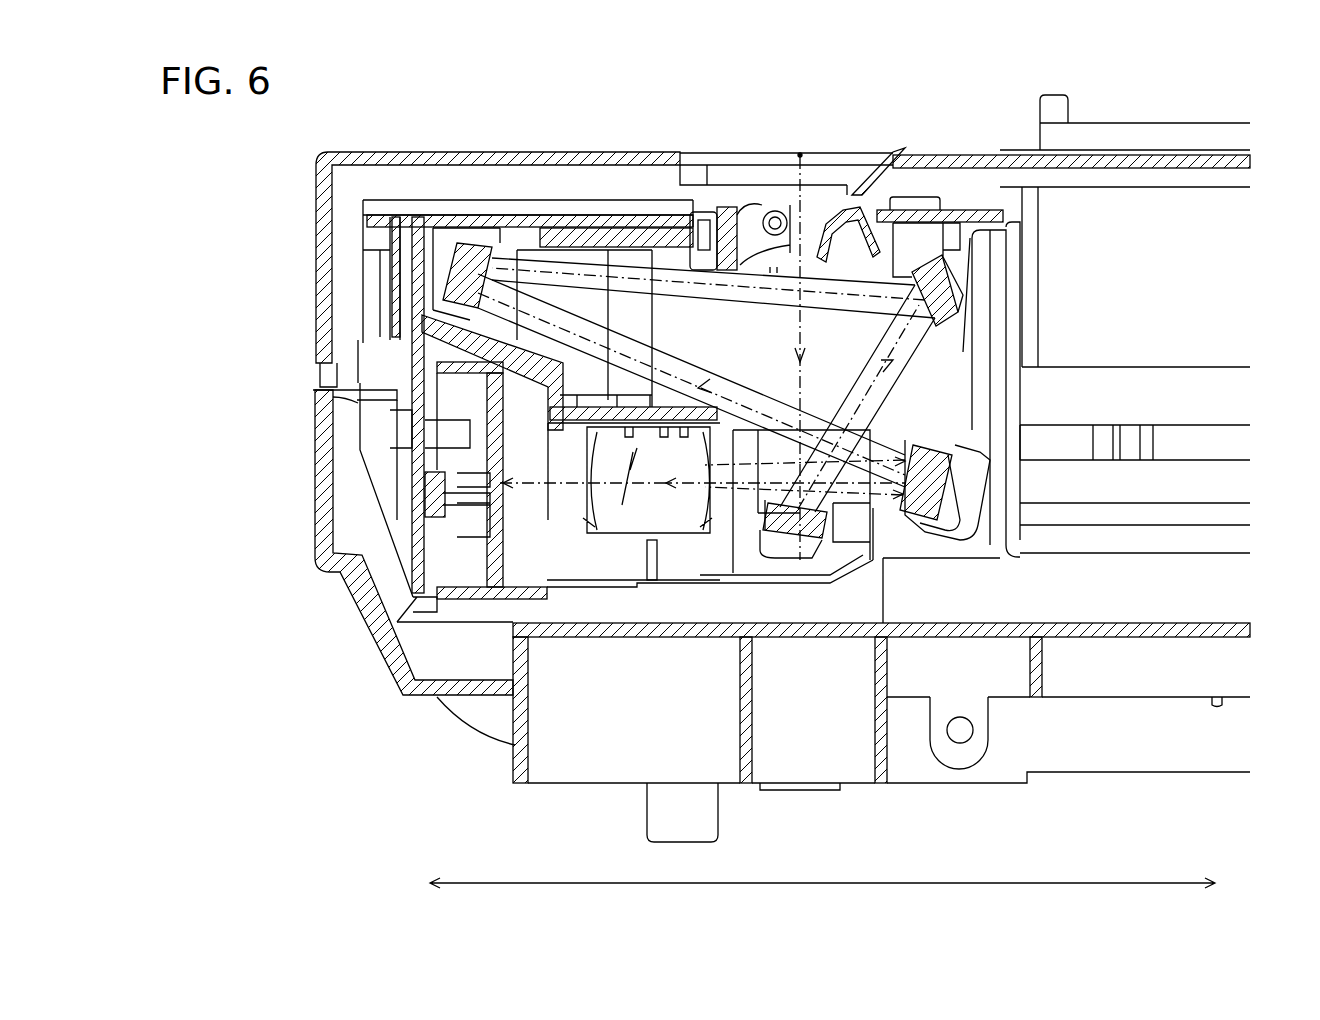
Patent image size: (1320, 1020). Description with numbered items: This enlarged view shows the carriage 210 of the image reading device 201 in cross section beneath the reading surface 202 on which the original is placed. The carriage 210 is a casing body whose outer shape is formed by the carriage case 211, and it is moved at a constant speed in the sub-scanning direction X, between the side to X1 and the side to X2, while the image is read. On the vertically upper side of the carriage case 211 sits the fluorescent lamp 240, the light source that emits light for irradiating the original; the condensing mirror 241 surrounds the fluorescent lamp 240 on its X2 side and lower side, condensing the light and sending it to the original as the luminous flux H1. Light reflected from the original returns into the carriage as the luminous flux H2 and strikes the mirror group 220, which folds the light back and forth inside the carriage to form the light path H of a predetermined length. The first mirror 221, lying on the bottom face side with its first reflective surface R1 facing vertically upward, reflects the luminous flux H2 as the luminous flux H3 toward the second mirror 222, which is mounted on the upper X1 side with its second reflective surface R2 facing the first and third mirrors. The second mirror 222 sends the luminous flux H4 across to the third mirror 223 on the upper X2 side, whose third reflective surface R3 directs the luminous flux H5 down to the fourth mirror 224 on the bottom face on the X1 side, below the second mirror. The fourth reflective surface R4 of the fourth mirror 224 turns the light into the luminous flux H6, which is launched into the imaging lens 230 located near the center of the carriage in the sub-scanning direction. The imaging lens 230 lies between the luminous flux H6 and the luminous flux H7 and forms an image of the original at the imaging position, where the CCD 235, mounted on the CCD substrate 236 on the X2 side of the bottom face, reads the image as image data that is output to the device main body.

The image reading apparatus 201 is at (1186, 104).
The reading surface 202 is at (808, 150).
The carriage 210 is at (430, 200).
The carriage case 211 is at (322, 318).
The mirror group 220 is at (880, 527).
The first mirror 221 is at (797, 530).
The second mirror 222 is at (945, 292).
The third mirror 223 is at (465, 240).
The fourth mirror 224 is at (913, 530).
The imaging lens 230 is at (633, 453).
The CCD 235 is at (427, 497).
The CCD substrate 236 is at (417, 603).
The fluorescent lamp 240 is at (772, 211).
The condensing mirror 241 is at (745, 207).
The first reflective surface R1 is at (825, 518).
The second reflective surface R2 is at (903, 277).
The third reflective surface R3 is at (500, 245).
The fourth reflective surface R4 is at (913, 442).
The light path H is at (947, 383).
The luminous flux H1 is at (785, 165).
The luminous flux H2 is at (800, 345).
The luminous flux H3 is at (913, 352).
The luminous flux H4 is at (690, 297).
The luminous flux H5 is at (770, 407).
The luminous flux H6 is at (748, 482).
The luminous flux H7 is at (527, 493).
The sub-scanning direction X is at (822, 869).
The side to X1 in the sub-scanning direction X1 is at (1239, 883).
The side to X2 in the sub-scanning direction X2 is at (412, 883).